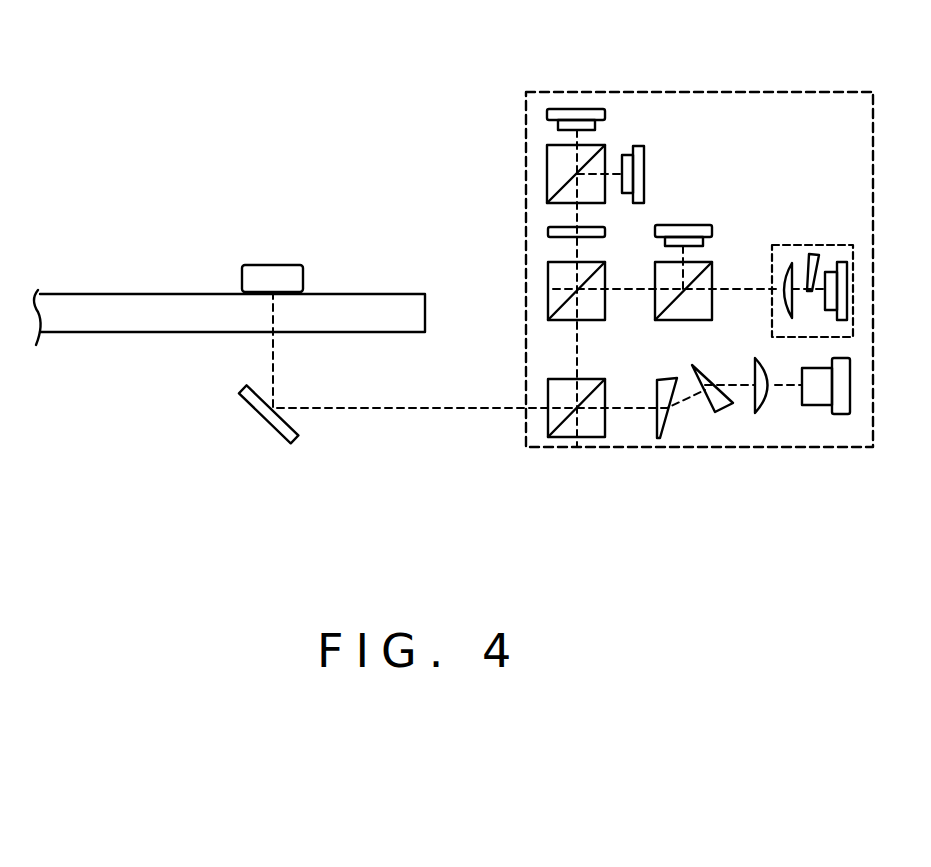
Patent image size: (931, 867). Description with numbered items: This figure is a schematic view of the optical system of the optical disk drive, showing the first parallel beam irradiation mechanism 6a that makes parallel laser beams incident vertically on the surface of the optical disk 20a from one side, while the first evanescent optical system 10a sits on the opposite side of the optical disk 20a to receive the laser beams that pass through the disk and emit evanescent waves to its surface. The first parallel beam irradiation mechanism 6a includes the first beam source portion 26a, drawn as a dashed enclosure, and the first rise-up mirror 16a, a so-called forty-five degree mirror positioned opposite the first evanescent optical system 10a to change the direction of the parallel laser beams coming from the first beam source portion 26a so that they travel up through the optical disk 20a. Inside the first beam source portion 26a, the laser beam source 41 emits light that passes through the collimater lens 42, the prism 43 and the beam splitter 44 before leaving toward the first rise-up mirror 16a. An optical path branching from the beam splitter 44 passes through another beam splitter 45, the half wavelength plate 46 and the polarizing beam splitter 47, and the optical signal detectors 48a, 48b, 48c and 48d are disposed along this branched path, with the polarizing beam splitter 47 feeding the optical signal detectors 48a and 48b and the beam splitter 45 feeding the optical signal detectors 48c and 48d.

The first parallel beam irradiation mechanism 6a is at (461, 120).
The first beam source portion 26a is at (752, 92).
The optical signal detector 48a is at (605, 113).
The polarizing beam splitter 47 is at (547, 168).
The optical signal detector 48b is at (647, 168).
The ½ wavelength plate 46 is at (548, 231).
The beam splitter 45 is at (655, 321).
The optical signal detector 48c is at (690, 225).
The optical signal detector 48d is at (811, 245).
The beam splitter 44 is at (548, 395).
The prism 43 is at (720, 415).
The collimater lens 42 is at (765, 414).
The laser beam source 41 is at (815, 405).
The optical disk 20a is at (74, 302).
The first evanescent optical system 10a is at (263, 265).
The first rise-up mirror 16a is at (247, 388).